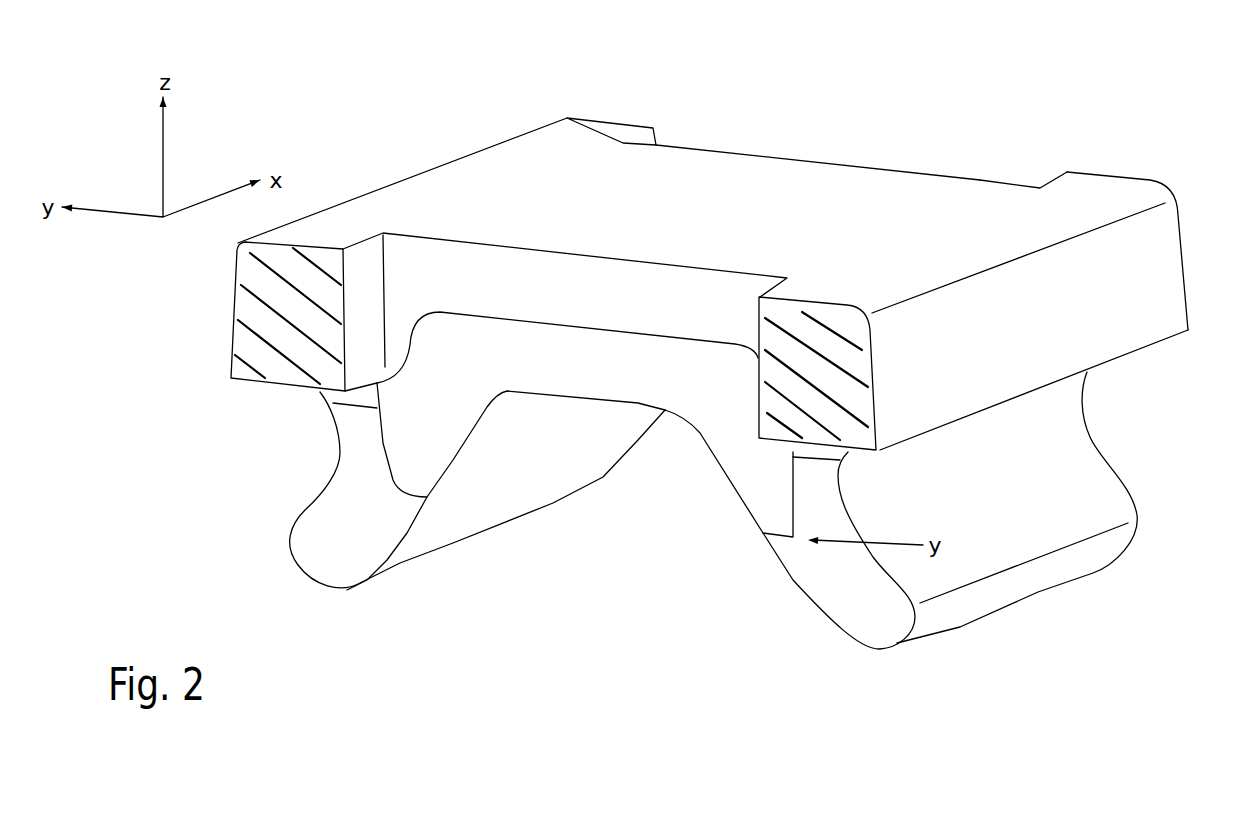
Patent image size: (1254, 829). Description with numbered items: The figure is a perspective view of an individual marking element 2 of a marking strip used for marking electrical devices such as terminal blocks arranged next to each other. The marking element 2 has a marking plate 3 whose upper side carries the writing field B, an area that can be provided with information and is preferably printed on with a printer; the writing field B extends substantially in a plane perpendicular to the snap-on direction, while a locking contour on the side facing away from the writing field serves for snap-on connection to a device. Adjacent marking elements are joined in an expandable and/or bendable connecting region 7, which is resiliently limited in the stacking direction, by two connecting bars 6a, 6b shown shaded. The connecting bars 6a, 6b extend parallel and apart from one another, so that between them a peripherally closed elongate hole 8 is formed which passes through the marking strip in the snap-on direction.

The marking element 2 is at (440, 160).
The elongate hole 8 is at (780, 158).
The writing field B is at (892, 200).
The marking plate 3 is at (982, 180).
The connecting region 7 is at (1157, 177).
The first connecting bar 6a is at (300, 317).
The second connecting bar 6b is at (827, 380).